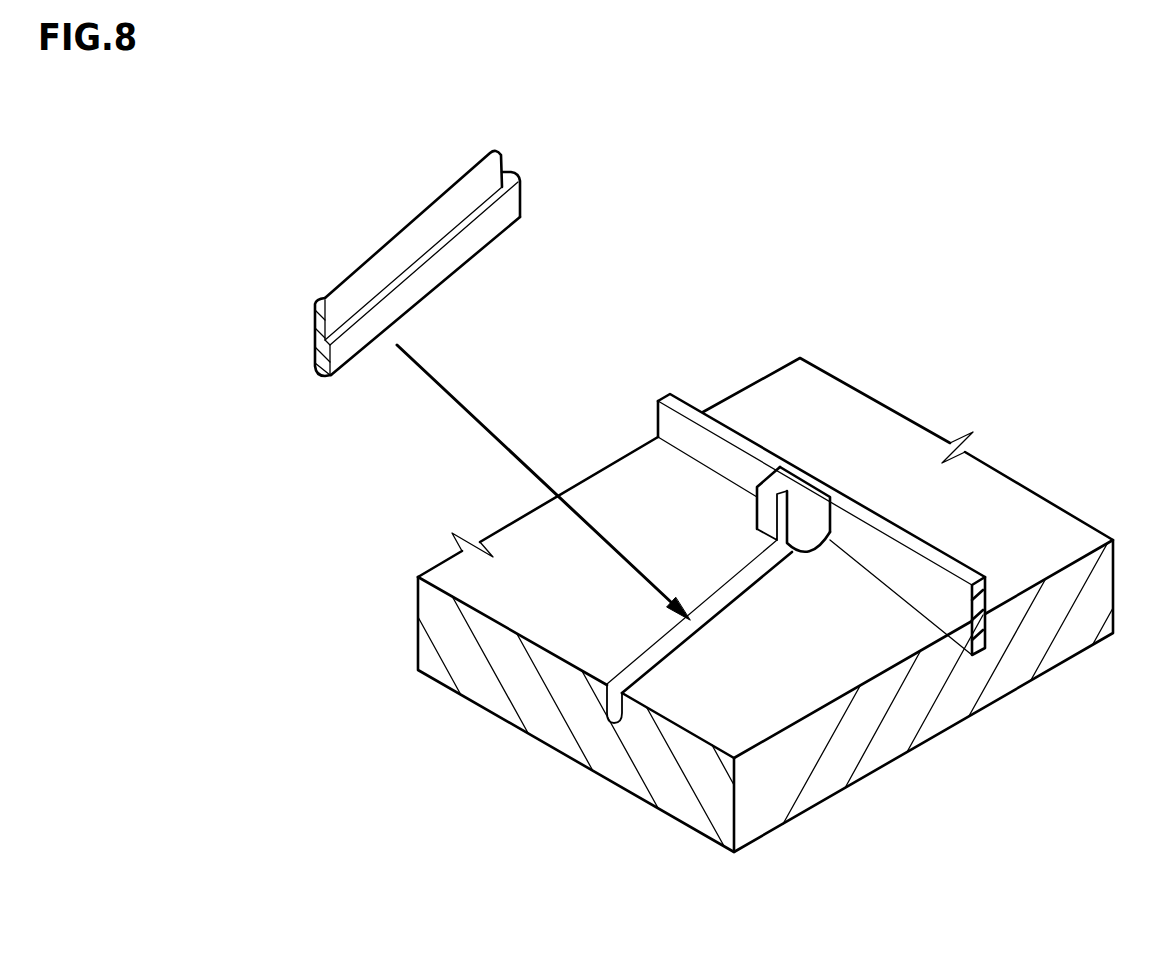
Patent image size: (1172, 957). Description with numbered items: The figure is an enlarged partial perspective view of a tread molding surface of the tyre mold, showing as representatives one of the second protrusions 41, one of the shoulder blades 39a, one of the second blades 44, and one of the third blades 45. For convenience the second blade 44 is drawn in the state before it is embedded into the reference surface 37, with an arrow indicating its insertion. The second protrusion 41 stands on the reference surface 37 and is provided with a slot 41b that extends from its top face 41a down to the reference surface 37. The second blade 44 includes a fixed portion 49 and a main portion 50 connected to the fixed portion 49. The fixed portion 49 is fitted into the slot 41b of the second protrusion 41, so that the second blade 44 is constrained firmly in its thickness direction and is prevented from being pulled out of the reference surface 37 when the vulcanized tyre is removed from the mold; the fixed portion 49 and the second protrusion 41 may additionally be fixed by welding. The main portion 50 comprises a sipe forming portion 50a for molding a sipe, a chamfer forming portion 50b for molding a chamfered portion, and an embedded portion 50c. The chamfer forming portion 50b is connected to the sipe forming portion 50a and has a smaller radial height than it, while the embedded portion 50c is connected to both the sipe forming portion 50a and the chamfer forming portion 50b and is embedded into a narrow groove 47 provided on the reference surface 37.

The reference surface 37 is at (779, 634).
The shoulder blade 39a is at (936, 537).
The second protrusion 41 is at (898, 570).
The top face 41a is at (813, 495).
The slot 41b is at (778, 514).
The second blade 44 is at (451, 259).
The third blade 45 is at (743, 425).
The narrow groove 47 is at (660, 645).
The fixed portion 49 is at (515, 203).
The main portion 50 is at (472, 278).
The sipe forming portion 50a is at (407, 243).
The chamfer forming portion 50b is at (460, 228).
The embedded portion 50c is at (432, 296).